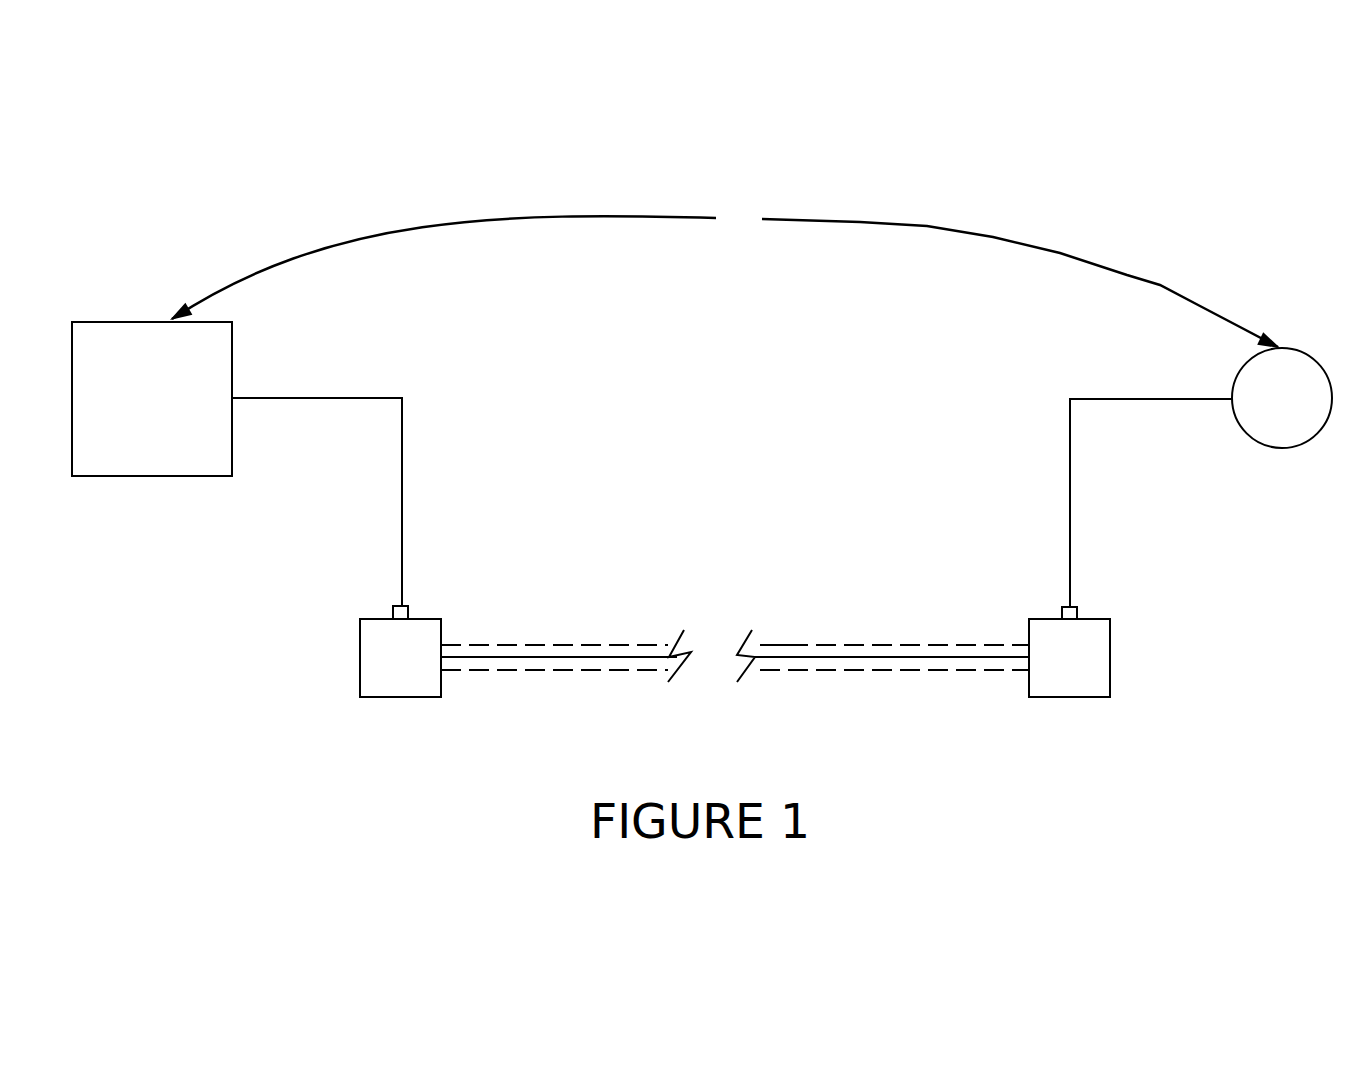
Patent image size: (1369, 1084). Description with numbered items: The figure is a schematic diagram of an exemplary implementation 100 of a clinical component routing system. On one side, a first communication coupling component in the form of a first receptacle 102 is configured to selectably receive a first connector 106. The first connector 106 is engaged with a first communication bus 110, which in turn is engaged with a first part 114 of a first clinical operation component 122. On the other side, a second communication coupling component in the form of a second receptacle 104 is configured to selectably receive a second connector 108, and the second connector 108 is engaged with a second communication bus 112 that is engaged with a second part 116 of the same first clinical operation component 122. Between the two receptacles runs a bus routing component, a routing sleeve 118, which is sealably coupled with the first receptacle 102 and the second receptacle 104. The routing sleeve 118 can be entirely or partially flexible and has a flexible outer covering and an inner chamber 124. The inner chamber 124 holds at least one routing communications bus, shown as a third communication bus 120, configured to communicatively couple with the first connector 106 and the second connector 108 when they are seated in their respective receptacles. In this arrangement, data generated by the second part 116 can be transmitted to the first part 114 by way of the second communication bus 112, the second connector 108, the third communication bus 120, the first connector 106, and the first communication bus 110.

The exemplary implementation 100 is at (1040, 204).
The first receptacle 102 is at (402, 686).
The second receptacle 104 is at (1073, 683).
The first connector 106 is at (405, 604).
The second connector 108 is at (1073, 605).
The first communication bus 110 is at (403, 453).
The second communication bus 112 is at (1069, 450).
The first part of first clinical operation component 114 is at (224, 340).
The second part of first clinical operation component 116 is at (1281, 347).
The routing sleeve 118 is at (880, 671).
The third communication bus 120 is at (613, 657).
The first clinical operation component 122 is at (725, 276).
The inner chamber 124 is at (782, 641).